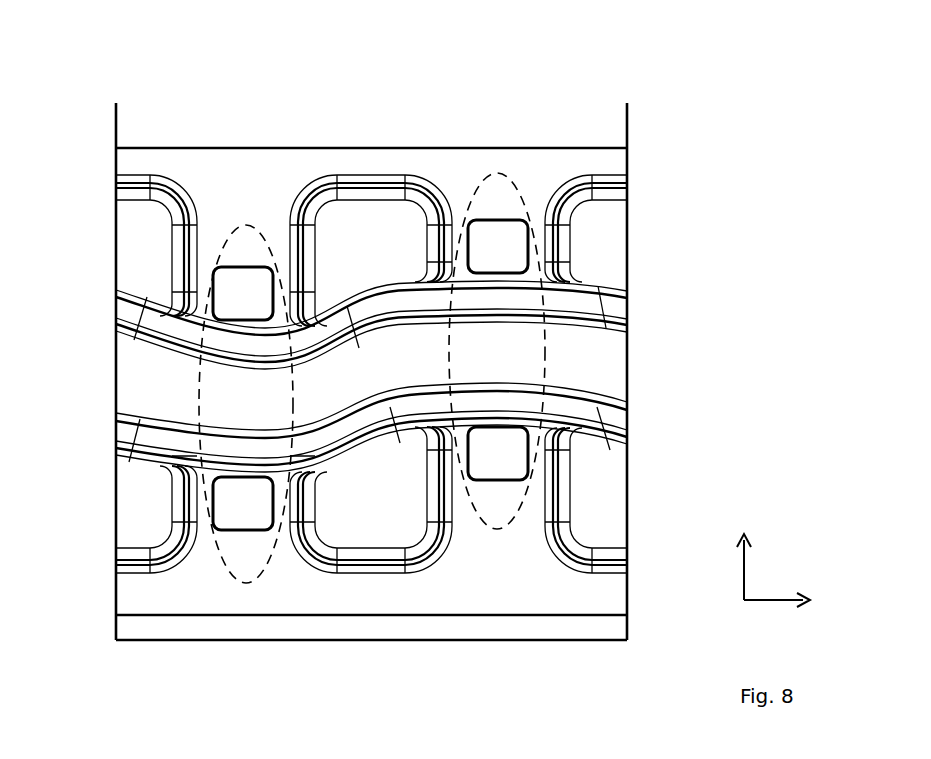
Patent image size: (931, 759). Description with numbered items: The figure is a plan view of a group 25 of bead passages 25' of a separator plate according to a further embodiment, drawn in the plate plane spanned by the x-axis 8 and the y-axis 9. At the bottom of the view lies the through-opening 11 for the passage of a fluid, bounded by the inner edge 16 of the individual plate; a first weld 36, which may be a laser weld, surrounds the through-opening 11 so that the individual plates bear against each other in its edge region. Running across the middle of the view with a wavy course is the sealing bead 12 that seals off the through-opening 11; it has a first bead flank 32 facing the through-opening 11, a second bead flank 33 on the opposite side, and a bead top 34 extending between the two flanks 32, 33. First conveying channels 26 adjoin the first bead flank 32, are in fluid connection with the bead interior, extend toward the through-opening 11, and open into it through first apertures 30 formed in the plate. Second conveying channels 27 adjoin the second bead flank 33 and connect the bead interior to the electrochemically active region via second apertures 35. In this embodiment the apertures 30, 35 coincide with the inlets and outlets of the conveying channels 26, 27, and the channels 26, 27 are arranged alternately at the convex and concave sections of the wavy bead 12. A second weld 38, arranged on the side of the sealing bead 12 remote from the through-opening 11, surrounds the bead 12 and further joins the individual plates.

The x-axis 8 is at (742, 555).
The y-axis 9 is at (763, 599).
The through-opening 11 is at (360, 707).
The sealing bead 12 is at (610, 355).
The inner edge 16 is at (518, 641).
The group of bead passages 25 is at (728, 235).
The bead passage 25' is at (352, 310).
The first conveying channel 26 is at (210, 530).
The second conveying channel 27 is at (208, 263).
The first aperture 30 is at (252, 510).
The first bead flank 32 is at (618, 437).
The second bead flank 33 is at (128, 322).
The bead top 34 is at (138, 403).
The second aperture 35 is at (245, 288).
The first weld 36 is at (490, 617).
The second weld 38 is at (350, 146).